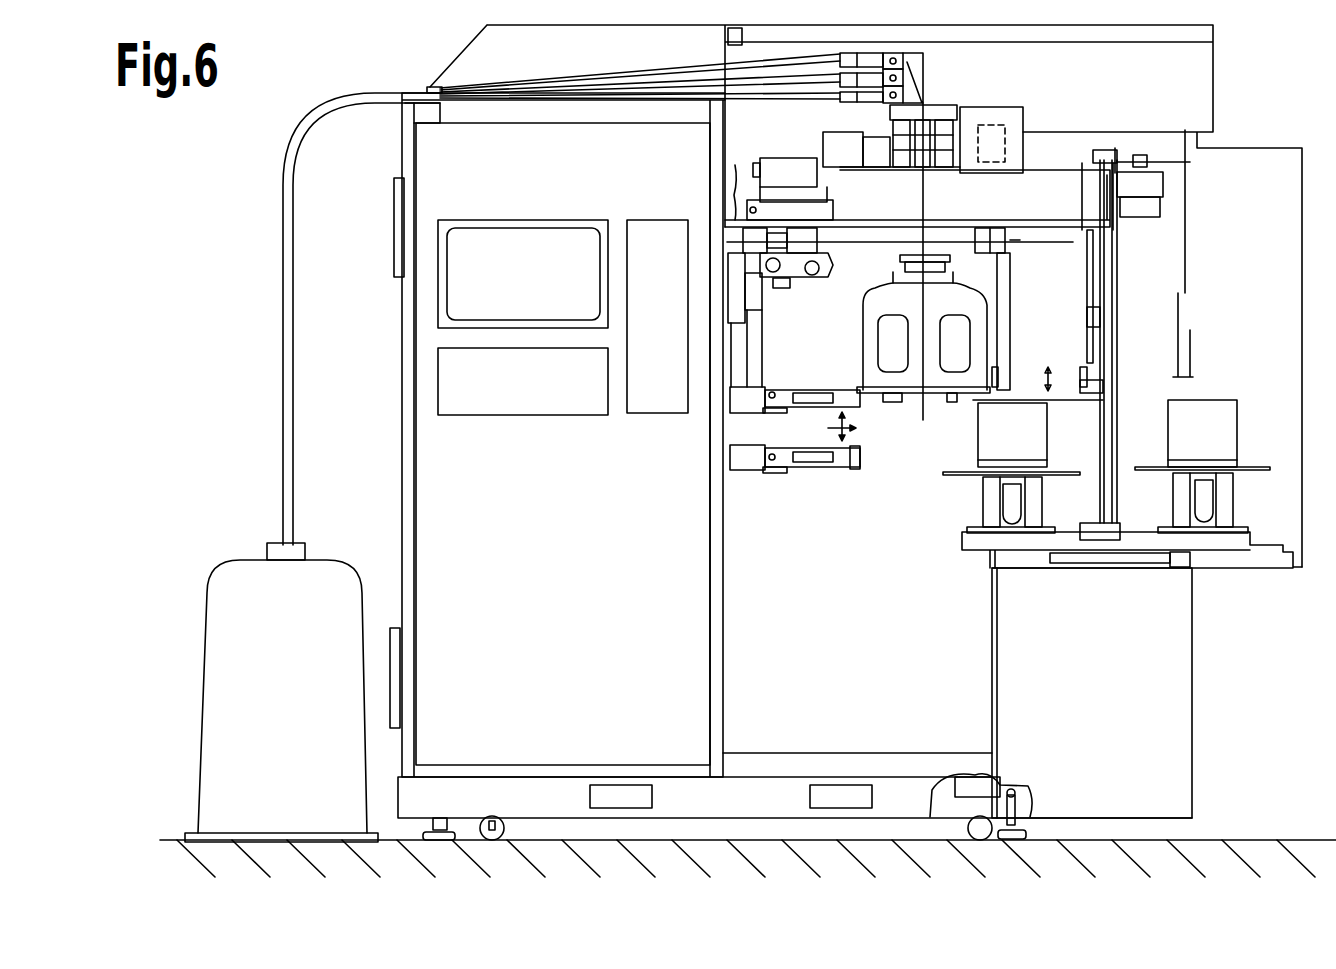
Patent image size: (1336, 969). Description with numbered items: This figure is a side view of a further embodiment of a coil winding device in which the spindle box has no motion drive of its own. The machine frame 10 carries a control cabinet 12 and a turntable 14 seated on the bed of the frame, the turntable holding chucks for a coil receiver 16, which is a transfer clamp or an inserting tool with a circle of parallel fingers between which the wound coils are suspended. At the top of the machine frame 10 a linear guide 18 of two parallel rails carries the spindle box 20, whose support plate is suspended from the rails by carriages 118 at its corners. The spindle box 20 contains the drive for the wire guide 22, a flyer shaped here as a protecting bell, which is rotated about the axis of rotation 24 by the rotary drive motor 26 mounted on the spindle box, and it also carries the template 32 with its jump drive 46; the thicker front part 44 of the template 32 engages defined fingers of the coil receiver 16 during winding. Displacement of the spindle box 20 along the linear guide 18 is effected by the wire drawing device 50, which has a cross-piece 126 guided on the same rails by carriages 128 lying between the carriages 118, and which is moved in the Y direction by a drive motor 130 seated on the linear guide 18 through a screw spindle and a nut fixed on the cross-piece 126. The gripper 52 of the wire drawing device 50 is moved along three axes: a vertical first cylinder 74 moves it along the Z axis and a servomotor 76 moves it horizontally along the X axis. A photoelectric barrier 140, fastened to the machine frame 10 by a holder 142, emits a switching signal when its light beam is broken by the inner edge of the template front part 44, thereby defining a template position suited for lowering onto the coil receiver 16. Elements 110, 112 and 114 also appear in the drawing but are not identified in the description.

The machine frame 10 is at (1192, 683).
The control cabinet 12 is at (425, 490).
The turntable 14 is at (972, 548).
The coil receiver 16 is at (1032, 422).
The linear guide 18 is at (1056, 220).
The spindle box 20 is at (1013, 239).
The wire guide 22 is at (977, 342).
The axis of rotation 24 is at (927, 412).
The rotary drive motor 26 is at (996, 130).
The template 32 is at (893, 402).
The front part of the template 44 is at (955, 402).
The jump drive 46 is at (853, 153).
The wire drawing device 50 is at (762, 476).
The gripper 52 is at (852, 472).
The first cylinder 74 is at (755, 285).
The servomotor 76 is at (822, 282).
The reservoir 110 is at (237, 590).
The hose 112 is at (283, 348).
The carriage 114 is at (1103, 375).
The carriages 118 is at (757, 236).
The cross-piece 126 is at (820, 273).
The carriages 128 is at (803, 233).
The drive motor 130 is at (777, 163).
The photoelectric barrier 140 is at (993, 357).
The holder 142 is at (1005, 290).